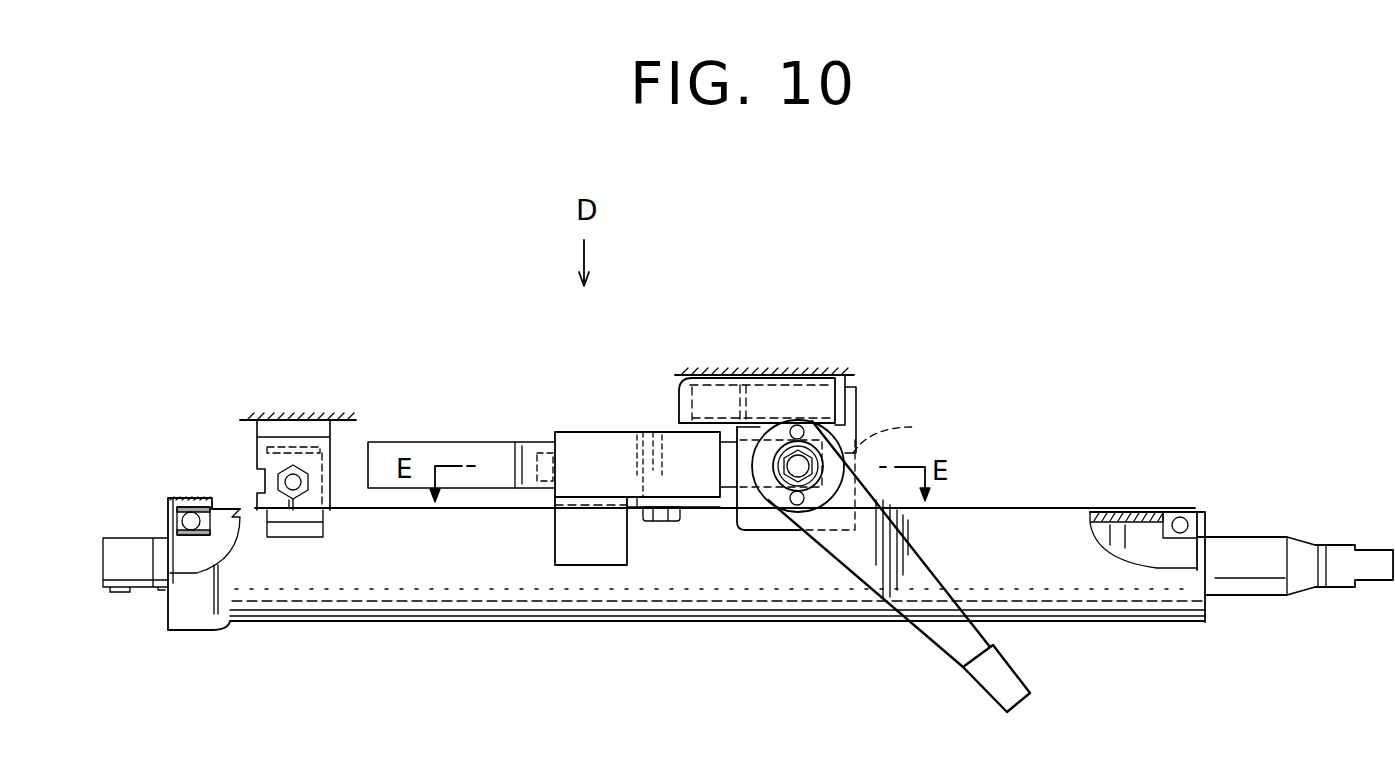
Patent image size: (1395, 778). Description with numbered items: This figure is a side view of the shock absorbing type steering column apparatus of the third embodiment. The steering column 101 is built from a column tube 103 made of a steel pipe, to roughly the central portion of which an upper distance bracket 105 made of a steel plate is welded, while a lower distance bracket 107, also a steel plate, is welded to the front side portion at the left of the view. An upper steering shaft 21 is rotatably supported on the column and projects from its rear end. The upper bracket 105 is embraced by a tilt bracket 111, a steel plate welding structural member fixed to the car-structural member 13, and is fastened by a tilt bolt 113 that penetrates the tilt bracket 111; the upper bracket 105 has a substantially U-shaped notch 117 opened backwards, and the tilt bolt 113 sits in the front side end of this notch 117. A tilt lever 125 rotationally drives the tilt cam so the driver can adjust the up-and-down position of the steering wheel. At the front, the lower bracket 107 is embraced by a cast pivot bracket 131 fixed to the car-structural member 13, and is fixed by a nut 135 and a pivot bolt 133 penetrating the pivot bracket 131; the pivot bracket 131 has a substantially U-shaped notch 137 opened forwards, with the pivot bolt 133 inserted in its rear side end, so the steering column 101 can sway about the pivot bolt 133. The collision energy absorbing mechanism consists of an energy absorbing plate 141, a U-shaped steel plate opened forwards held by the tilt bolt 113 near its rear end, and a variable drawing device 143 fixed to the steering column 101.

The car-structural member 13 is at (340, 426).
The upper steering shaft 21 is at (1253, 553).
The steering column 101 is at (506, 630).
The column tube 103 is at (688, 603).
The upper distance bracket 105 is at (858, 433).
The lower distance bracket 107 is at (322, 524).
The tilt bracket 111 is at (845, 397).
The tilt bolt 113 is at (787, 475).
The notch 117 is at (855, 507).
The tilt lever 125 is at (947, 637).
The pivot bracket 131 is at (325, 450).
The pivot bolt 133 is at (289, 502).
The nut 135 is at (289, 502).
The notch 137 is at (271, 478).
The energy absorbing plate 141 is at (497, 450).
The variable drawing device 143 is at (584, 426).